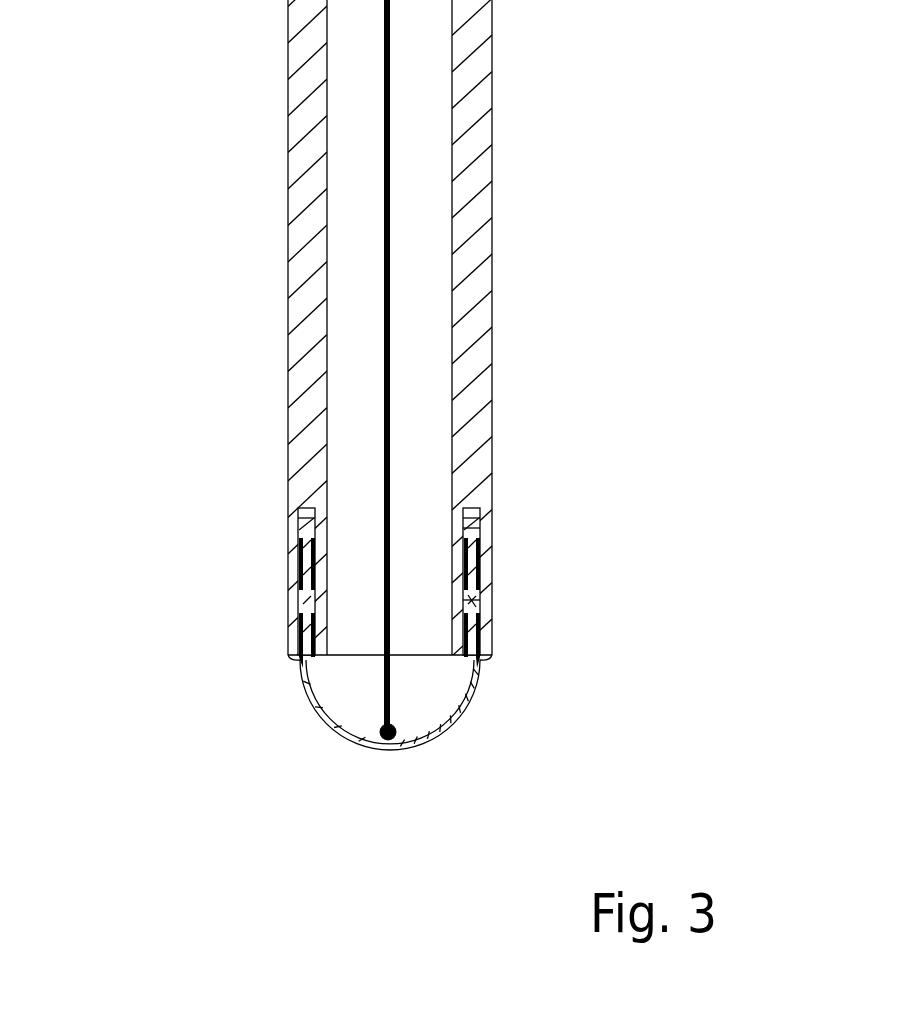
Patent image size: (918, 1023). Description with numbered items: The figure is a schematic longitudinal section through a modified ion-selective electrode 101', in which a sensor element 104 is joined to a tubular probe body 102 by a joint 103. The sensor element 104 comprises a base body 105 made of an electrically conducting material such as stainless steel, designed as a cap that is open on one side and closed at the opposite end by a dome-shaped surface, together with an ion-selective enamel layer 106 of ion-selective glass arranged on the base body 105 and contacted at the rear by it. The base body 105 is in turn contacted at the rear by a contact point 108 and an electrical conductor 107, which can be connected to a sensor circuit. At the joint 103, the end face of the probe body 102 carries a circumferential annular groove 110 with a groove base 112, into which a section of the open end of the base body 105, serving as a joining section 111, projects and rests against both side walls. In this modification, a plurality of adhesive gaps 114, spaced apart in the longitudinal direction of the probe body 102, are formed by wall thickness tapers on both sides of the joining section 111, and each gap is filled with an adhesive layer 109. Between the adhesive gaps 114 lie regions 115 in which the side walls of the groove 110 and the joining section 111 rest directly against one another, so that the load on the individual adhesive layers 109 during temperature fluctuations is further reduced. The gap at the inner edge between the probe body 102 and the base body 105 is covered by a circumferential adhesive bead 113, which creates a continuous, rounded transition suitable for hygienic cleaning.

The ion-selective electrode 101' is at (499, 346).
The probe body 102 is at (490, 407).
The joint 103 is at (232, 526).
The sensor element 104 is at (307, 690).
The base body 105 is at (467, 697).
The ion-selective enamel layer 106 is at (433, 737).
The electrical conductor 107 is at (393, 323).
The contact point 108 is at (388, 735).
The adhesive layer 109 is at (483, 557).
The groove 110 is at (466, 508).
The joining section 111 is at (483, 573).
The groove base 112 is at (303, 507).
The adhesive bead 113 is at (298, 662).
The adhesive gaps 114 is at (300, 562).
The regions of direct contact 115 is at (482, 523).